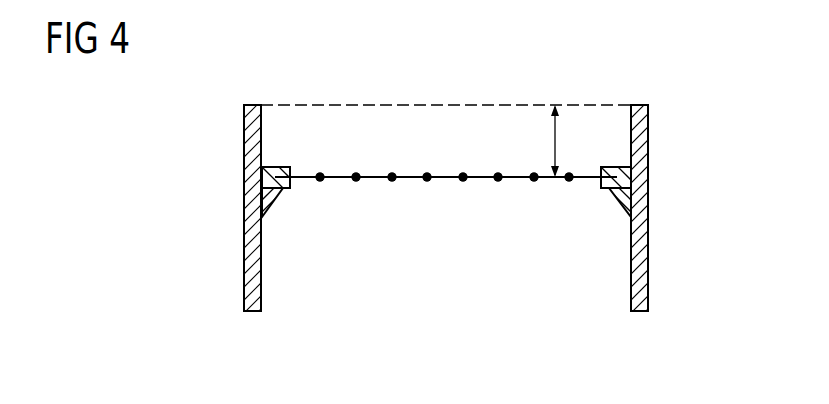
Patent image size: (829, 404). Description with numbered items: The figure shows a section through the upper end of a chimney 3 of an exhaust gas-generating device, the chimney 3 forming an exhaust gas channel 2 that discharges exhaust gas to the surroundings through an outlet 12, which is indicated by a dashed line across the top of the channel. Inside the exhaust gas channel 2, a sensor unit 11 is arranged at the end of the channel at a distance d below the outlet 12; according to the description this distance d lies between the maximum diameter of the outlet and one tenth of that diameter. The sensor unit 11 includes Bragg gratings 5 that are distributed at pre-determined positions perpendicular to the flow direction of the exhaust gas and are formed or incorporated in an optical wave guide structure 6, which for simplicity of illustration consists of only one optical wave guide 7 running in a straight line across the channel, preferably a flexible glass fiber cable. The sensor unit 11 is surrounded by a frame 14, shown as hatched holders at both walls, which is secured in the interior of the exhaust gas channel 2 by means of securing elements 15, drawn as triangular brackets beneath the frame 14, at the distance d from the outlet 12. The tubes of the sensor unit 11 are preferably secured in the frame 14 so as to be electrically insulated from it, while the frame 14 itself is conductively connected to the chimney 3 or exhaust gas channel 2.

The exhaust gas channel 2 is at (447, 305).
The chimney 3 is at (247, 257).
The Bragg gratings 5 is at (463, 179).
The optical wave guide structure 6 is at (413, 179).
The optical wave guide 7 is at (445, 219).
The sensor unit 11 is at (483, 206).
The outlet 12 is at (343, 105).
The frame 14 is at (262, 176).
The securing elements 15 is at (282, 194).
The distance d is at (555, 140).